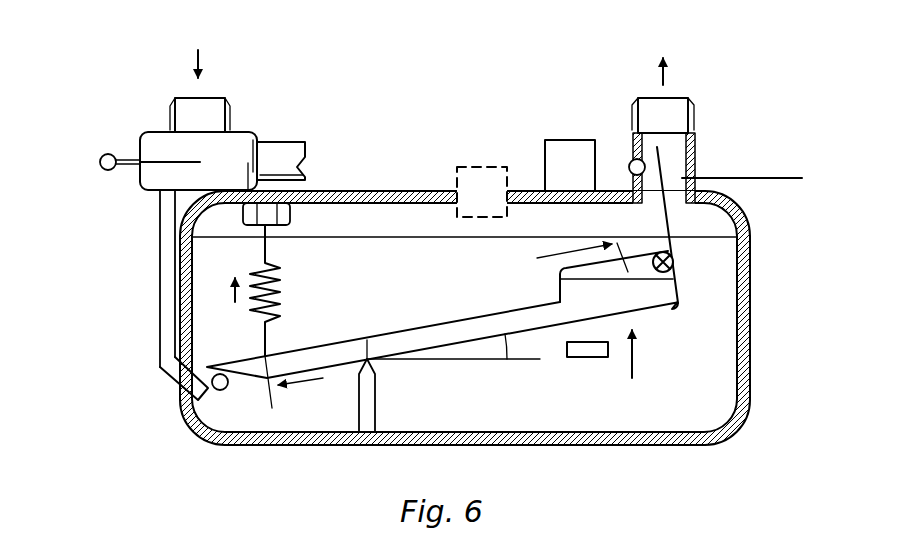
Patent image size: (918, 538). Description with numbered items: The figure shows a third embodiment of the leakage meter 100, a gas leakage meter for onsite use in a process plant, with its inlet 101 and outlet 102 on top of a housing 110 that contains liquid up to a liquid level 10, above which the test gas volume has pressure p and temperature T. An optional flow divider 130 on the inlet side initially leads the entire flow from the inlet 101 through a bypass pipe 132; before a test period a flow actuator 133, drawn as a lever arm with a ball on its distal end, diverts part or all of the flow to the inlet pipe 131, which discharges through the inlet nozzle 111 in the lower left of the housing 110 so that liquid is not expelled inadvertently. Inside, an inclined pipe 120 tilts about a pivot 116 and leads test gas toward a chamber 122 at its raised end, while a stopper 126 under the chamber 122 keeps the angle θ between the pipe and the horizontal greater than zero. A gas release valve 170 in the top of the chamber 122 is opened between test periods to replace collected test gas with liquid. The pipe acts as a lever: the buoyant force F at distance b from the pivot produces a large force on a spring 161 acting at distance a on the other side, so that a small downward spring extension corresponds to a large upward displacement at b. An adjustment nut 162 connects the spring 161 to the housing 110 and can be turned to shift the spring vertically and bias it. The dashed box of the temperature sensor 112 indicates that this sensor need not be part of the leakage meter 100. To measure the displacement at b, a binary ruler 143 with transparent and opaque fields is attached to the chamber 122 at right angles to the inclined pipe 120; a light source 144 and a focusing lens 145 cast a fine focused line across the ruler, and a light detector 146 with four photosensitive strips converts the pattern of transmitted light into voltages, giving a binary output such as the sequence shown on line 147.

The leakage meter 100 is at (358, 42).
The liquid level 10 is at (430, 237).
The housing 110 is at (340, 187).
The temperature sensor 112 is at (476, 170).
The light source 144 is at (560, 142).
The binary ruler 143 is at (690, 153).
The outlet 102 is at (675, 108).
The focusing lens 145 is at (630, 160).
The light detector 146 is at (695, 172).
The line 147 is at (762, 180).
The flow divider 130 is at (150, 138).
The inlet 101 is at (190, 102).
The bypass pipe 132 is at (285, 150).
The flow actuator 133 is at (125, 165).
The inlet pipe 131 is at (160, 272).
The inlet nozzle 111 is at (170, 378).
The adjustment nut 162 is at (290, 225).
The spring 161 is at (280, 293).
The inclined pipe 120 is at (455, 320).
The pivot 116 is at (372, 362).
The chamber 122 is at (628, 308).
The gas release valve 170 is at (675, 270).
The stopper 126 is at (590, 357).